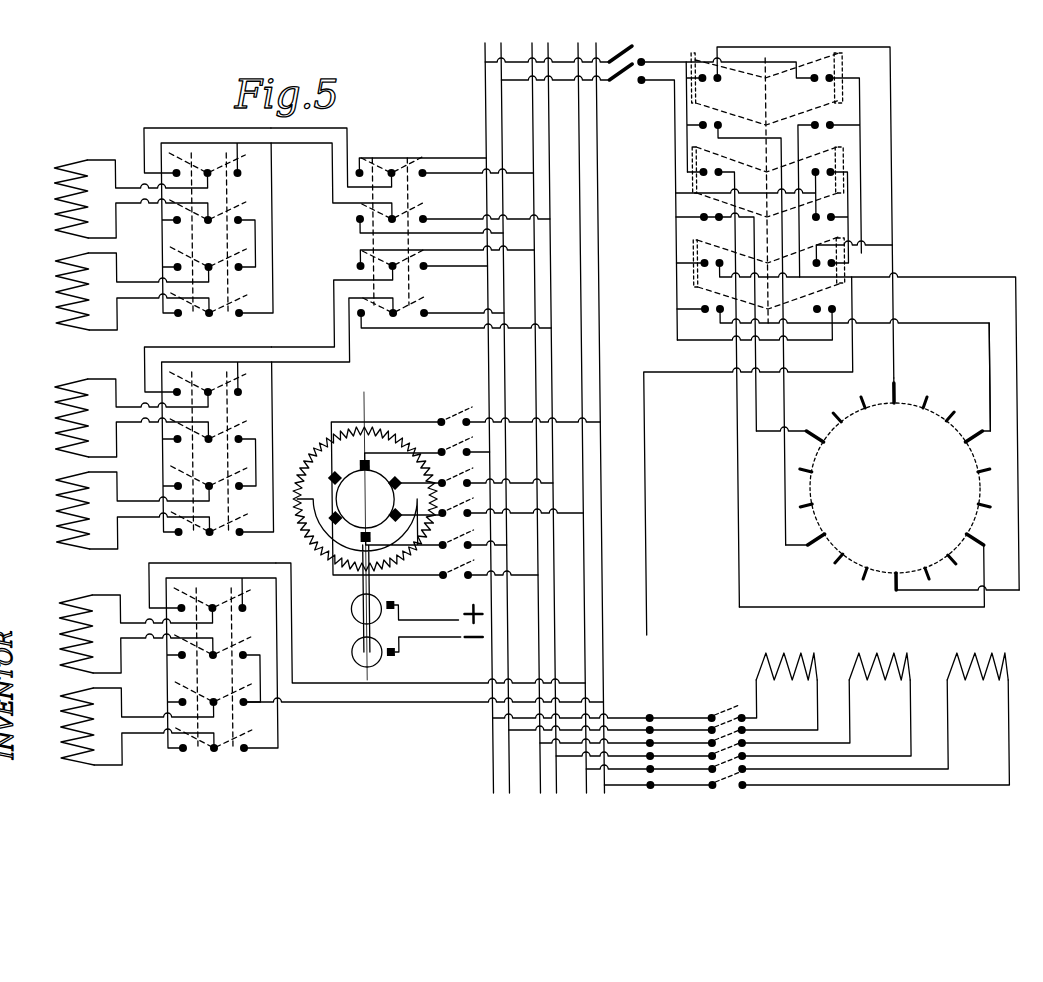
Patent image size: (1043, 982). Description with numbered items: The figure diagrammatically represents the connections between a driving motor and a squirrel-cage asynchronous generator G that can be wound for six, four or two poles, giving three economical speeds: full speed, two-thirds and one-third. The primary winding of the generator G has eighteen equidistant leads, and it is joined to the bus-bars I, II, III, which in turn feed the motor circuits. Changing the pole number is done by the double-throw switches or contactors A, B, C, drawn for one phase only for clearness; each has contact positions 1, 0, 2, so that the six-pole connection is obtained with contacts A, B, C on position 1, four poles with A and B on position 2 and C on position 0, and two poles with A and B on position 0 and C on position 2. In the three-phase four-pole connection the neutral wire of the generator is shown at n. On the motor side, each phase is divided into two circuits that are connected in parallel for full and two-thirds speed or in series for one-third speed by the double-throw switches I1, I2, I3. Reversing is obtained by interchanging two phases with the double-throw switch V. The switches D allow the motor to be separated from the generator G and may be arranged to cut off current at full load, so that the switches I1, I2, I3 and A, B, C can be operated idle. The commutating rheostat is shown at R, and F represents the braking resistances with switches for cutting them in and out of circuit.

The bus-bar I is at (263, 403).
The bus-bar II is at (284, 403).
The bus-bar III is at (307, 403).
The double-throw switch I1 is at (268, 222).
The double-throw switch I2 is at (270, 401).
The double-throw switch I3 is at (376, 657).
The double-throw switch V is at (453, 225).
The switches D is at (651, 193).
The double-throw switch A is at (791, 296).
The double-throw switch B is at (763, 377).
The double-throw switch C is at (847, 413).
The switch contact position 1 is at (708, 148).
The switch contact position 0 is at (765, 166).
The switch contact position 2 is at (825, 146).
The neutral wire n is at (749, 456).
The generator G is at (877, 465).
The commutating rheostat R is at (447, 536).
The braking resistances F is at (751, 713).